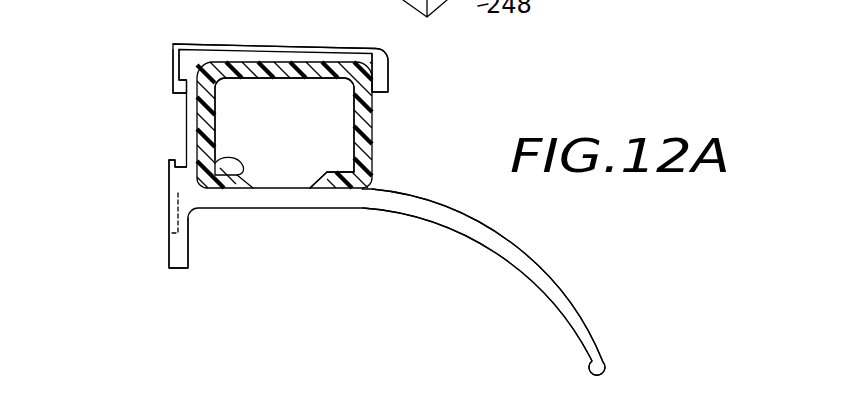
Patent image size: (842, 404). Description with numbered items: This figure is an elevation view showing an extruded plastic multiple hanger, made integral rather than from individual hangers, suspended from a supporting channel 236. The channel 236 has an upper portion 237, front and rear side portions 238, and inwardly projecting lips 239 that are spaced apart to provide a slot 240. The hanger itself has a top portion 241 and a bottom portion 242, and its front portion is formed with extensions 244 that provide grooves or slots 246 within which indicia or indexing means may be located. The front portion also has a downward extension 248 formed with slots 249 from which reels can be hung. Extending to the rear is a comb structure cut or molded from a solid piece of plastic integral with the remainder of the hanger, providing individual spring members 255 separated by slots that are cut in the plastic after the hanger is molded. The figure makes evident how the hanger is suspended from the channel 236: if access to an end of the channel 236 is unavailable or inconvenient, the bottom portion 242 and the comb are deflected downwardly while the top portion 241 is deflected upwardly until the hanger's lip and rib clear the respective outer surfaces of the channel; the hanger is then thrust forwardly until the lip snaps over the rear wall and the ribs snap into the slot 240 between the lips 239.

The channel 236 is at (376, 134).
The upper portion 237 is at (298, 80).
The front and rear side portions 238 is at (371, 102).
The inwardly projecting lips 239 is at (338, 171).
The slot 240 is at (232, 161).
The top portion 241 is at (272, 47).
The bottom portion 242 is at (289, 209).
The extensions 244 is at (172, 62).
The grooves or slots 246 is at (180, 90).
The downward extension 248 is at (168, 242).
The slots 249 is at (170, 212).
The spring members 255 is at (545, 272).